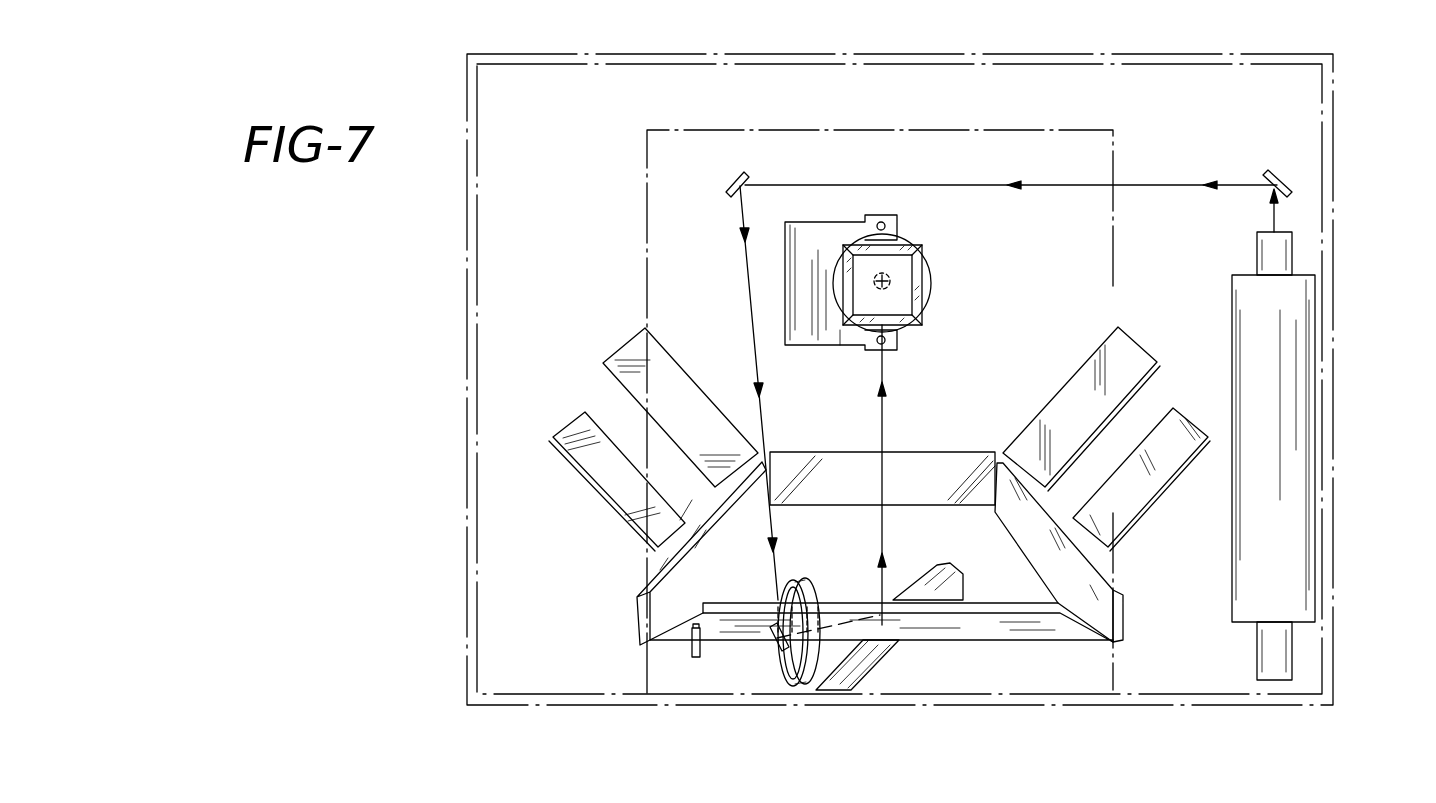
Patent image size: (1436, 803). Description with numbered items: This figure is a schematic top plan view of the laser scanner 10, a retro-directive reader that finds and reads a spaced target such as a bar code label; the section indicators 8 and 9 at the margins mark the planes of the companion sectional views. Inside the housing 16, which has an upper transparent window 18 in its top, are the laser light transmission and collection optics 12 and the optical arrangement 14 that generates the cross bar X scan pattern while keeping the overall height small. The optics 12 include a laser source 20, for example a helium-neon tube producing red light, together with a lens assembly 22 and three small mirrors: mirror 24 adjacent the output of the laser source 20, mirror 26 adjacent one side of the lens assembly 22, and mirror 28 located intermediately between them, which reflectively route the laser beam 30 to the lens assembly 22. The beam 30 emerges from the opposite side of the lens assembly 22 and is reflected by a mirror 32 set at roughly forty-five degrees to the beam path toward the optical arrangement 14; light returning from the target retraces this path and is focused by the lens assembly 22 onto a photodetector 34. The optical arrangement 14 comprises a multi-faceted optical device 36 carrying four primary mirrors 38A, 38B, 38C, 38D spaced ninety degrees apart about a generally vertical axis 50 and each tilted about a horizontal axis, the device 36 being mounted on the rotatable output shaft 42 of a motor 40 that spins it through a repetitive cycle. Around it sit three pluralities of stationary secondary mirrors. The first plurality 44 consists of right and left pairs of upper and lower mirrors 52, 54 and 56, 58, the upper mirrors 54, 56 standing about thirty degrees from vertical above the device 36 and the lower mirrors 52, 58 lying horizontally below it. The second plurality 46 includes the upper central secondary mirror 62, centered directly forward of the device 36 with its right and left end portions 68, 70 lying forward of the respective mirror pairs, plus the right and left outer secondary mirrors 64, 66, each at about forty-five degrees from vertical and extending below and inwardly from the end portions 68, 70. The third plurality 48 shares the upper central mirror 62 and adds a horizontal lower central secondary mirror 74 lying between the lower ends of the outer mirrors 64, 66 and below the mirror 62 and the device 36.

The section line 8- 8 is at (468, 733).
The section line 9- 9 is at (1409, 94).
The laser scanner 10 is at (425, 298).
The laser light transmission and collection optics 12 is at (813, 702).
The optical arrangement 14 is at (722, 336).
The housing 16 is at (468, 486).
The upper transparent window 18 is at (647, 190).
The laser source 20 is at (1293, 356).
The lens assembly 22 is at (789, 678).
The small mirror 24 is at (1275, 171).
The small mirror 26 is at (775, 646).
The small mirror 28 is at (731, 178).
The laser light beam 30 is at (1273, 212).
The mirror 32 is at (880, 658).
The photodetector 34 is at (690, 645).
The multi-faceted optical device 36 is at (887, 260).
The primary mirror 38A is at (905, 322).
The primary mirror 38B is at (916, 305).
The primary mirror 38C is at (855, 247).
The primary mirror 38D is at (843, 262).
The motor 40 is at (931, 290).
The rotatable output shaft 42 is at (884, 273).
The first plurality of secondary mirrors 44 is at (740, 425).
The second plurality of secondary mirrors 46 is at (1079, 641).
The third plurality of secondary mirrors 48 is at (858, 512).
The vertical axis 50 is at (905, 273).
The right lower secondary mirror 52 is at (637, 348).
The right upper secondary mirror 54 is at (583, 420).
The left upper secondary mirror 56 is at (1170, 410).
The left lower secondary mirror 58 is at (1118, 335).
The upper central secondary mirror 62 is at (1000, 640).
The right outer secondary mirror 64 is at (697, 557).
The left outer secondary mirror 66 is at (1040, 540).
The right end portion 68 is at (713, 628).
The left end portion 70 is at (1049, 627).
The lower central secondary mirror 74 is at (925, 455).